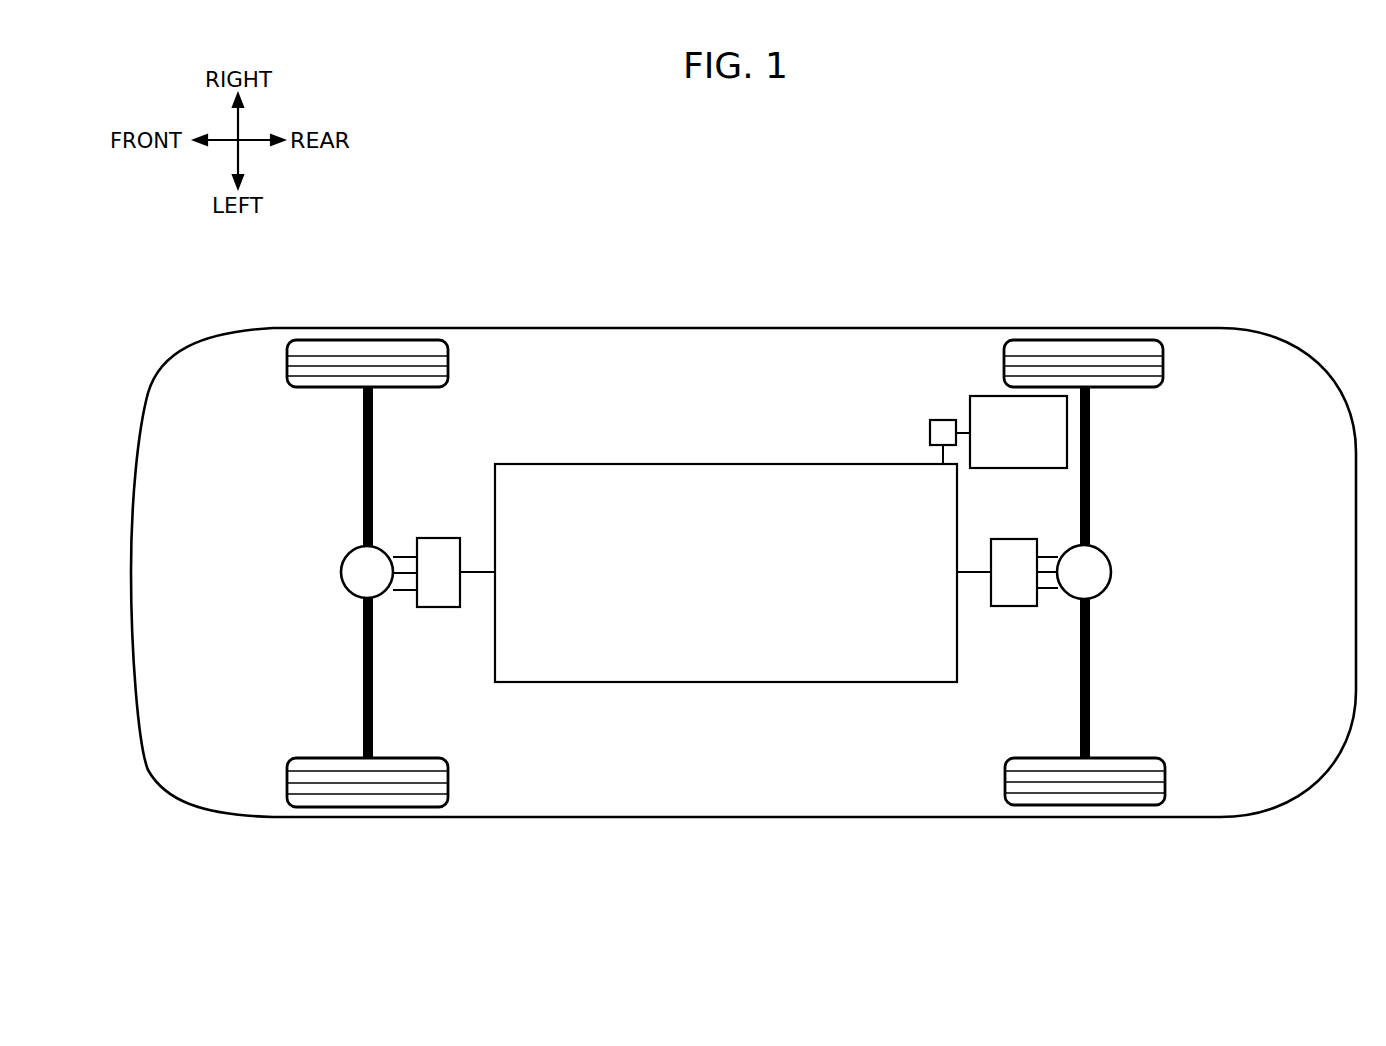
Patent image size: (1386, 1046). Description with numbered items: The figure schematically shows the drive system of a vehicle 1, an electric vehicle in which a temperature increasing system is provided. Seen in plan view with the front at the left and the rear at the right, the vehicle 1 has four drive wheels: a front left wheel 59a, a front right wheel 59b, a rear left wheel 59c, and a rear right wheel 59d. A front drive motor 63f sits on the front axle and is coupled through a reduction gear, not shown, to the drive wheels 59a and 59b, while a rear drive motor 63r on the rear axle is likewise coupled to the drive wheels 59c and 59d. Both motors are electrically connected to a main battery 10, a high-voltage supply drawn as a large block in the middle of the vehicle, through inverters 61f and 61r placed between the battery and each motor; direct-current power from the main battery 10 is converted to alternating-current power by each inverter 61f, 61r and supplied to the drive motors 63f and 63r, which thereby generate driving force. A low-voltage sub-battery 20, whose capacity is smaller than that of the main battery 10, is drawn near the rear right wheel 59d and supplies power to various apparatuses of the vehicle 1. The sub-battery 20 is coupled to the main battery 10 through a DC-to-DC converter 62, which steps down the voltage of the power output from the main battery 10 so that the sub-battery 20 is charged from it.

The vehicle 1 is at (1141, 125).
The main battery 10 is at (743, 487).
The sub-battery 20 is at (994, 405).
The DC-to-DC converter 62 is at (940, 425).
The drive wheel 59a is at (370, 808).
The drive wheel 59b is at (369, 340).
The drive wheel 59c is at (1086, 806).
The drive wheel 59d is at (1083, 340).
The inverter 61f is at (441, 597).
The inverter 61r is at (1014, 596).
The drive motor 63f is at (362, 597).
The drive motor 63r is at (1090, 597).